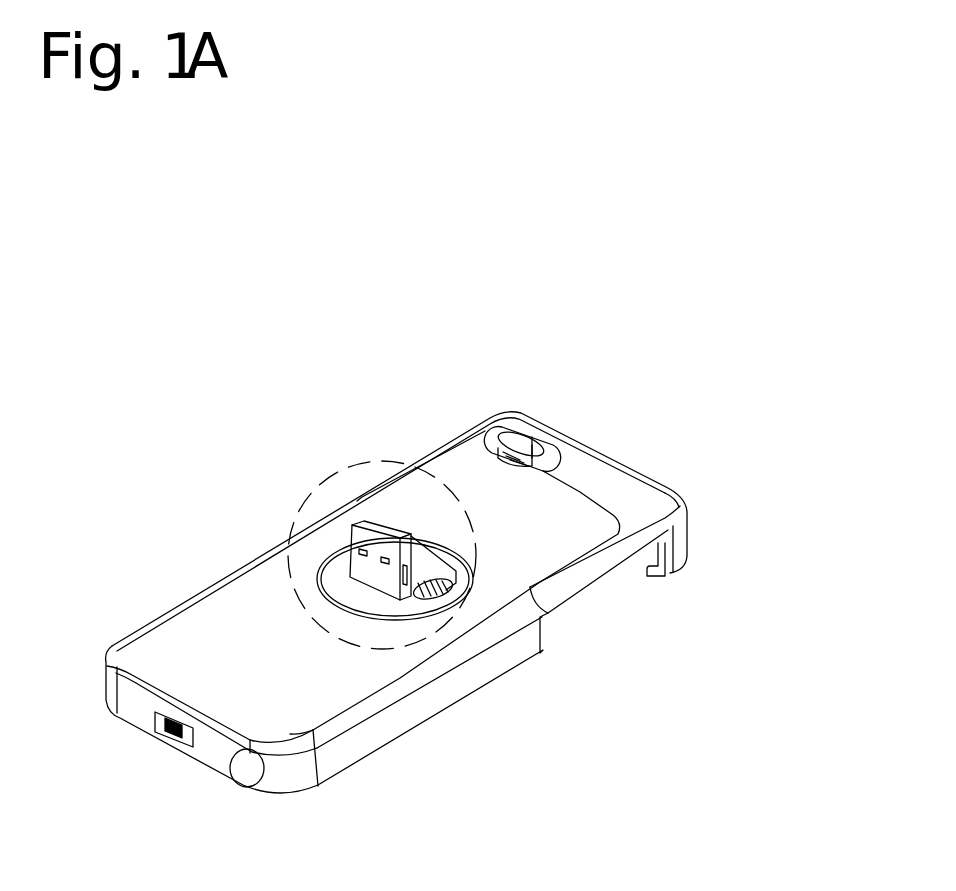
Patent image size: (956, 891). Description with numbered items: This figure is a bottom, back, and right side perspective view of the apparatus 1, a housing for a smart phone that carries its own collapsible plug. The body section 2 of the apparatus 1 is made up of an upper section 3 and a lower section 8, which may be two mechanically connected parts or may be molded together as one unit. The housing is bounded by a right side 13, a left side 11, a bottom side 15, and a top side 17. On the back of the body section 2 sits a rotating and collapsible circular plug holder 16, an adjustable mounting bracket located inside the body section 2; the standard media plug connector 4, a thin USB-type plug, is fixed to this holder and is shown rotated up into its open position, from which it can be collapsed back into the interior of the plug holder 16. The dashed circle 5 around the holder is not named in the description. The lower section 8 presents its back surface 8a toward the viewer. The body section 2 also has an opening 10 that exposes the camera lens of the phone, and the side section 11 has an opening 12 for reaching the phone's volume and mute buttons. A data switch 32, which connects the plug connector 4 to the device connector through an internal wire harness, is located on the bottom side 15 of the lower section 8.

The apparatus 1 is at (366, 450).
The body section 2 is at (272, 605).
The upper section 3 is at (596, 478).
The standard media plug connector 4 is at (373, 550).
The USB storage module region 5 is at (310, 490).
The lower section 8 is at (220, 642).
The back surface 8a is at (312, 690).
The opening 10 is at (512, 443).
The left side 11 is at (468, 670).
The opening 12 is at (602, 595).
The right side 13 is at (192, 592).
The bottom side 15 is at (138, 702).
The collapsible circular plug holder 16 is at (362, 597).
The top side 17 is at (630, 468).
The data switch 32 is at (170, 735).